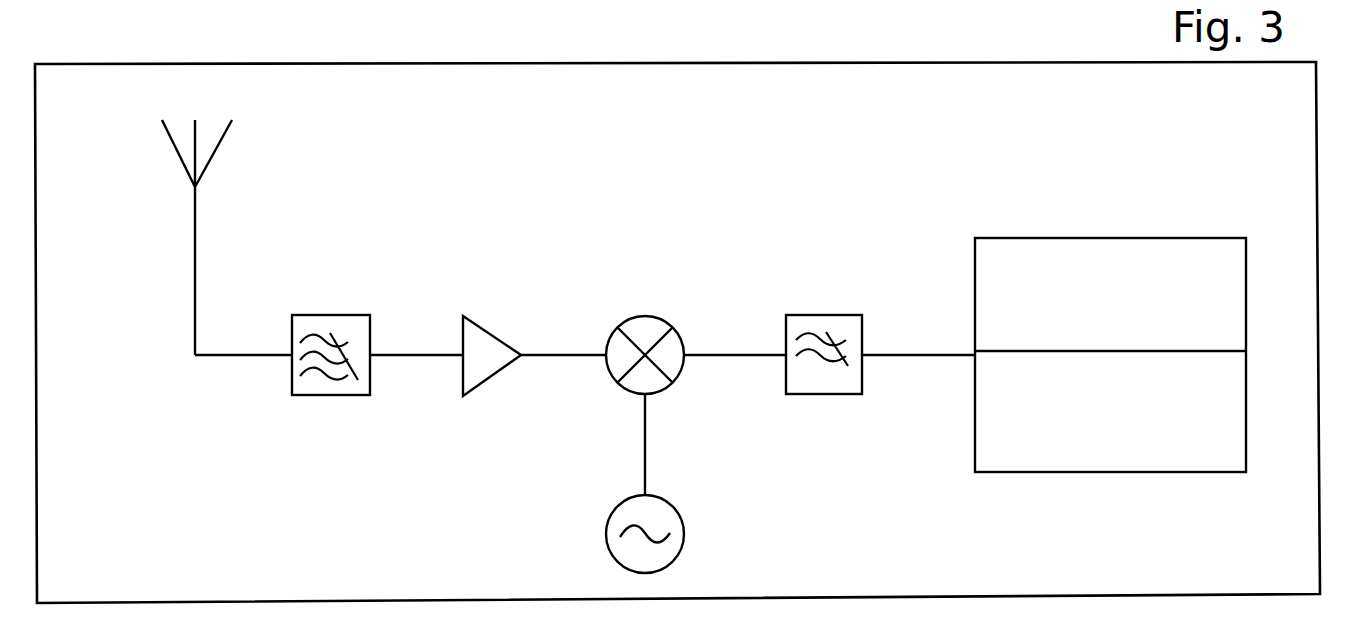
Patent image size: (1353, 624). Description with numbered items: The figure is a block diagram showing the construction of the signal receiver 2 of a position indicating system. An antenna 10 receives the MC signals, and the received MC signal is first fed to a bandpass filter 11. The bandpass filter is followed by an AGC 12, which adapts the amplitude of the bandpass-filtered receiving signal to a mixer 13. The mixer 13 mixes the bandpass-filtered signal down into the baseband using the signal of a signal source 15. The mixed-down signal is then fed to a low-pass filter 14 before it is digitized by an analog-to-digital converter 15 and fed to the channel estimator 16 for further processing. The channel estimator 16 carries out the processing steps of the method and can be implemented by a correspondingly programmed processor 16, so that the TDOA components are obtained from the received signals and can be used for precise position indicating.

The signal receiver 2 is at (596, 52).
The antenna 10 is at (163, 128).
The bandpass filter 11 is at (330, 315).
The AGC 12 is at (492, 330).
The mixer 13 is at (652, 316).
The low-pass filter 14 is at (826, 315).
The signal source / analog-to-digital converter 15 is at (612, 513).
The ADC and channel estimation 16 is at (975, 443).